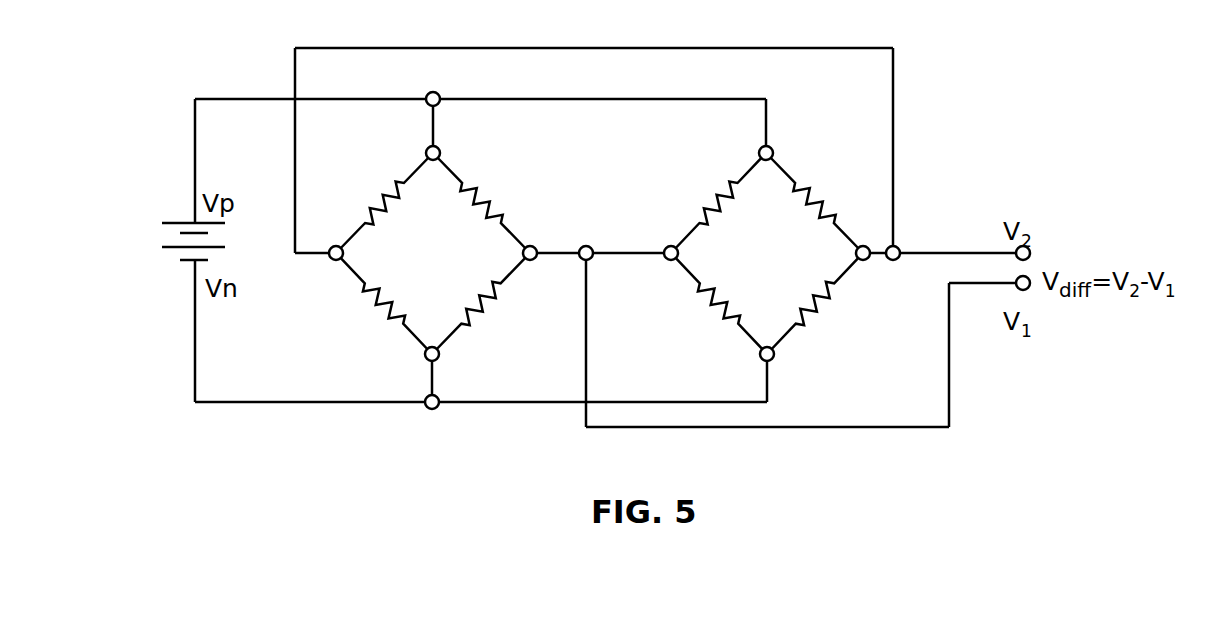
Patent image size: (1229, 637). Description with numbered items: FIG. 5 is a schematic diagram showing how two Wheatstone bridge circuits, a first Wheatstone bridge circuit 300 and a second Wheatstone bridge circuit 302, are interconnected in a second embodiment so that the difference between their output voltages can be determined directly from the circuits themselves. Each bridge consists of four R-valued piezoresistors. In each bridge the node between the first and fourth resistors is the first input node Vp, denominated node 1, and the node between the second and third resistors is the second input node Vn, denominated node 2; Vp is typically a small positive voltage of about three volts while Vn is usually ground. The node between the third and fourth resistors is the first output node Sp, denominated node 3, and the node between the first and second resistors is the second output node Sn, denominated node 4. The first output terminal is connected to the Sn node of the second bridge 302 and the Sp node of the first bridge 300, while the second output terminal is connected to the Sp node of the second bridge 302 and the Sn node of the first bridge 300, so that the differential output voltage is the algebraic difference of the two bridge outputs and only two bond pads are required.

The node 1 is at (438, 148).
The node 2 is at (437, 360).
The node 3 is at (528, 246).
The node 4 is at (330, 247).
The first Wheatstone bridge circuit 300 is at (432, 252).
The second Wheatstone bridge circuit 302 is at (778, 252).